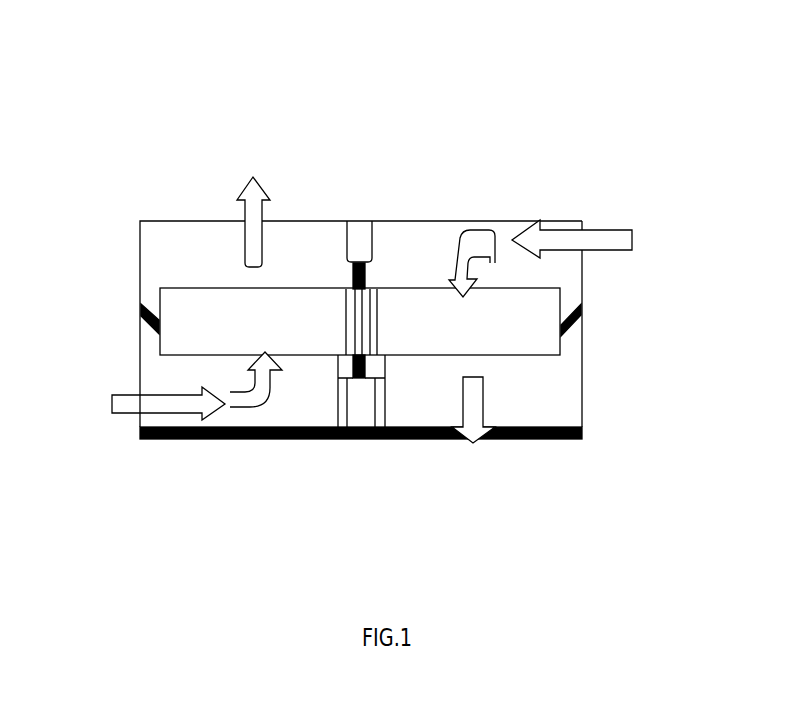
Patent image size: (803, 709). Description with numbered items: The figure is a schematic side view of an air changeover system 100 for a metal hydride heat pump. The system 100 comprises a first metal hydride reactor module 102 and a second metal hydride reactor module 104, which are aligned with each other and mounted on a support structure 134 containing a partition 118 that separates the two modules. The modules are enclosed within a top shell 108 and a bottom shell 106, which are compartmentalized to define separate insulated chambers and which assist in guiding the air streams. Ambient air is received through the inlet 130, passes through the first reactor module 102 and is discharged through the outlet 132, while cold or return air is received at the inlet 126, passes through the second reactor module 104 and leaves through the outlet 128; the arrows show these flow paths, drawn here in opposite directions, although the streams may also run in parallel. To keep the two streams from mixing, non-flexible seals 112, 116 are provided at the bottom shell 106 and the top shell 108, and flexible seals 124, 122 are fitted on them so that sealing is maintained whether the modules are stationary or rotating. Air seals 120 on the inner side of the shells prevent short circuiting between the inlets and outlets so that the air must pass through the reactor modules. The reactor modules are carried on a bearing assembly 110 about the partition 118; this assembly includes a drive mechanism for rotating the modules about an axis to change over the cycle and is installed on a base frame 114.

The system 100 is at (370, 285).
The first metal hydride reactor module 102 is at (360, 237).
The second metal hydride reactor module 104 is at (496, 219).
The bottom shell 106 is at (635, 324).
The top shell 108 is at (312, 323).
The bearing assembly 110 is at (315, 430).
The non-flexible seal 112 is at (385, 467).
The base frame 114 is at (376, 461).
The non-flexible seal 116 is at (370, 190).
The partition 118 is at (408, 403).
The air seal 120 is at (615, 324).
The flexible seal 122 is at (398, 230).
The flexible seal 124 is at (333, 435).
The inlet 126 is at (605, 219).
The outlet 128 is at (502, 445).
The inlet 130 is at (163, 399).
The outlet 132 is at (221, 200).
The support structure 134 is at (113, 335).